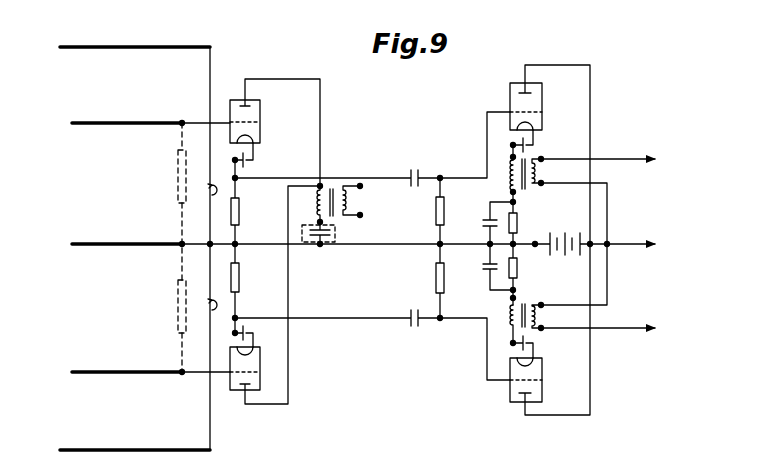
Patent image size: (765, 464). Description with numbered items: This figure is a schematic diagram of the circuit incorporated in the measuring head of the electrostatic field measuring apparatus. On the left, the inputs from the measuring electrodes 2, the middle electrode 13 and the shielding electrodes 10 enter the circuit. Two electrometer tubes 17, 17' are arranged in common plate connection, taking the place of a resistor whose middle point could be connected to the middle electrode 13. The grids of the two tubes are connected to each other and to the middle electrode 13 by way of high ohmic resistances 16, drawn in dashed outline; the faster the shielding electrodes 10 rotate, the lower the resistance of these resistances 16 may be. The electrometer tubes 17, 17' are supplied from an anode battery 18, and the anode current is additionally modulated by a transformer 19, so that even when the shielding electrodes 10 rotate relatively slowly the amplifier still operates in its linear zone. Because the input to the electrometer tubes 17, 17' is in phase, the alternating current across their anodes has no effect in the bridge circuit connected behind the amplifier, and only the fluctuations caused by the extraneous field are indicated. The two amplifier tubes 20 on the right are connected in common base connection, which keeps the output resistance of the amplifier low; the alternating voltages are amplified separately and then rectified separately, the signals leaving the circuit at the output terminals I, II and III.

The shielding electrodes 10 is at (121, 249).
The measuring electrodes 2 is at (141, 248).
The middle electrode 13 is at (284, 245).
The high ohmic resistances 16 is at (178, 178).
The electrometer tubes 17 is at (270, 145).
The electrometer tube 17' is at (271, 310).
The anode battery 18 is at (337, 242).
The transformer 19 is at (336, 183).
The amplifier tubes 20 is at (542, 103).
The output terminal I is at (667, 148).
The output terminal II is at (687, 257).
The output terminal III is at (699, 341).